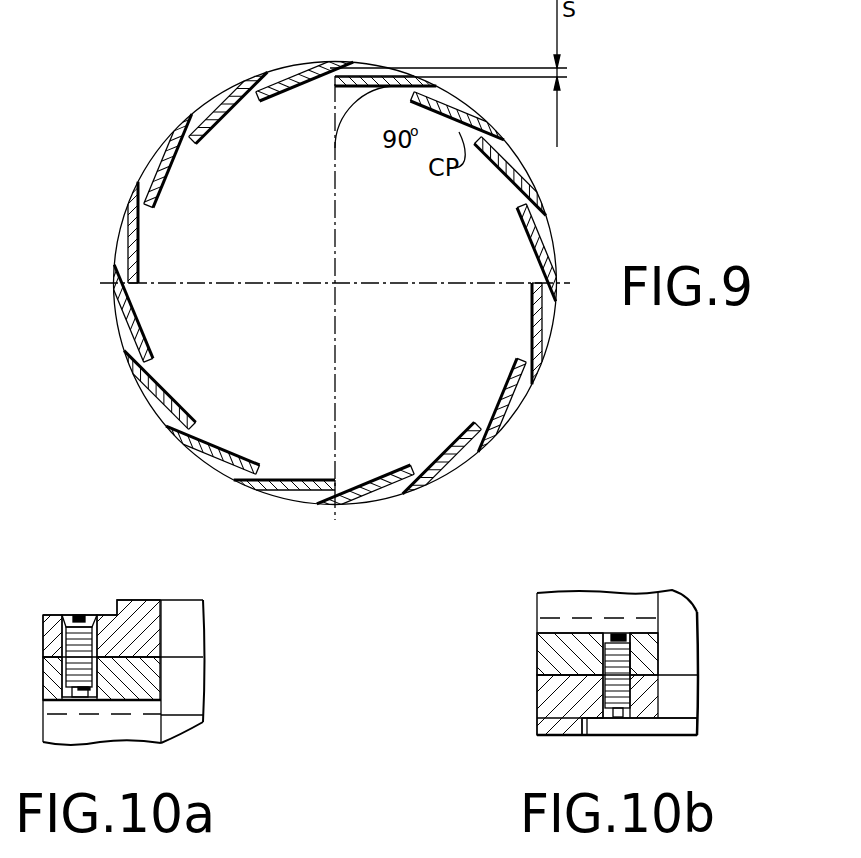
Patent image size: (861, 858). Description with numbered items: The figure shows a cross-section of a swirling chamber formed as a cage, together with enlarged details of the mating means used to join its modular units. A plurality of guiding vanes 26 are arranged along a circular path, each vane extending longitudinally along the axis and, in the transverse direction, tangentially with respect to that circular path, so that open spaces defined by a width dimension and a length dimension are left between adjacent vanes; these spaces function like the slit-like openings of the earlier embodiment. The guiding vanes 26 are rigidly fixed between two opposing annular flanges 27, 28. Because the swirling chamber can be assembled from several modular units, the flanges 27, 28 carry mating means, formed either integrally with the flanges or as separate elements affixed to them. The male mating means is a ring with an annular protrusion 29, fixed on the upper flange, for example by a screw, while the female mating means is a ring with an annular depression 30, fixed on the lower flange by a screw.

In FIG. 9, the guiding vanes 26 is at (286, 71).
In FIG. 10A, the annular flange 27 is at (159, 683).
In FIG. 10B, the annular flange 28 is at (658, 657).
In FIG. 10A, the annular protrusion 29 is at (145, 622).
In FIG. 10B, the annular depression 30 is at (578, 699).